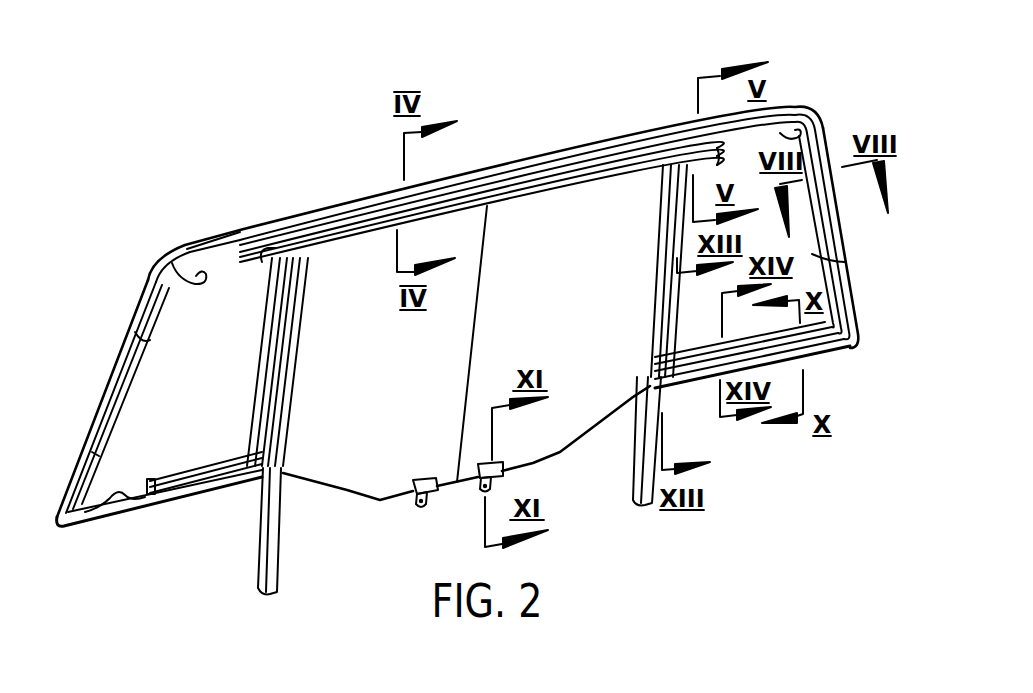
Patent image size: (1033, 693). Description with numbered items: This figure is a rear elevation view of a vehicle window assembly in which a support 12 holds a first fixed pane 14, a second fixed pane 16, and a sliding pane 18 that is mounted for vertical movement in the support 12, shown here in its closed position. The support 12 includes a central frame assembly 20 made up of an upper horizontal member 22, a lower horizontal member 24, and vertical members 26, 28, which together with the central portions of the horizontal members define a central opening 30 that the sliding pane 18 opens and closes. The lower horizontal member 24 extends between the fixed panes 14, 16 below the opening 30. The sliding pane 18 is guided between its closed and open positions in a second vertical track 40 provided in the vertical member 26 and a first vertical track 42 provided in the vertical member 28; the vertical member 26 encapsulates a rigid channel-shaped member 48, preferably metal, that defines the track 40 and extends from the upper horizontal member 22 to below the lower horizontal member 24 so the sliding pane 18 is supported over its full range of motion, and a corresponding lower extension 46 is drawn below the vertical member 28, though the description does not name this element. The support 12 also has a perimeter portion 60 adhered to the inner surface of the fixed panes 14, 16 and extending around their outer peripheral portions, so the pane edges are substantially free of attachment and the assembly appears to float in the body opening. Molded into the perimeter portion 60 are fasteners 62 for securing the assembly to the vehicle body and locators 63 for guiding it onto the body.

The support 12 is at (256, 209).
The first fixed pane 14 is at (157, 448).
The second fixed pane 16 is at (812, 254).
The sliding pane 18 is at (453, 230).
The central frame assembly 20 is at (630, 132).
The upper horizontal member 22 is at (665, 125).
The lower horizontal member 24 is at (702, 392).
The vertical member 26 is at (262, 351).
The vertical member 28 is at (660, 266).
The central opening 30 is at (528, 222).
The second vertical track 40 is at (300, 366).
The first vertical track 42 is at (650, 314).
The rear lower guide channel 46 is at (634, 482).
The rigid channel-shaped member 48 is at (280, 557).
The perimeter portion 60 is at (160, 262).
The fasteners 62 is at (120, 358).
The locators 63 is at (150, 289).